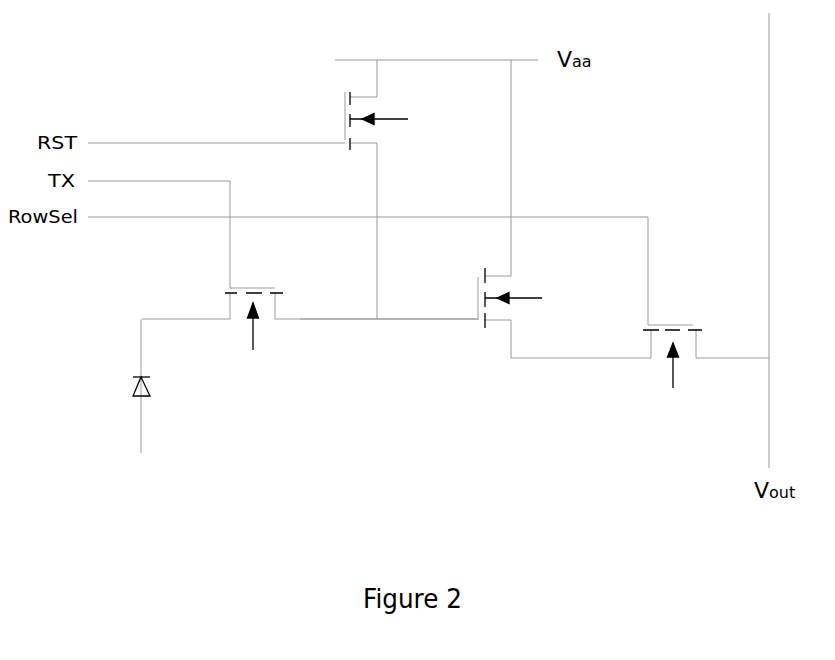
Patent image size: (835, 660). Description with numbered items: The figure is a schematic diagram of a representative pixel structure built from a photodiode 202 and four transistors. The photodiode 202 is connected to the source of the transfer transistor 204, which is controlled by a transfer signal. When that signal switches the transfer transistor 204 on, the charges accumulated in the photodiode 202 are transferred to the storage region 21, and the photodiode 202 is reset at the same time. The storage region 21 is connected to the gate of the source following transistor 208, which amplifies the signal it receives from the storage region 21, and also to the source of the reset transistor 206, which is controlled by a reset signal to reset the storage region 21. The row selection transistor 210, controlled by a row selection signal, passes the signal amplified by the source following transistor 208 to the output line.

The photodiode 202 is at (162, 388).
The transfer transistor 204 is at (282, 348).
The reset transistor 206 is at (328, 97).
The source following transistor 208 is at (482, 347).
The row selection transistor 210 is at (680, 300).
The storage region 21 is at (380, 317).